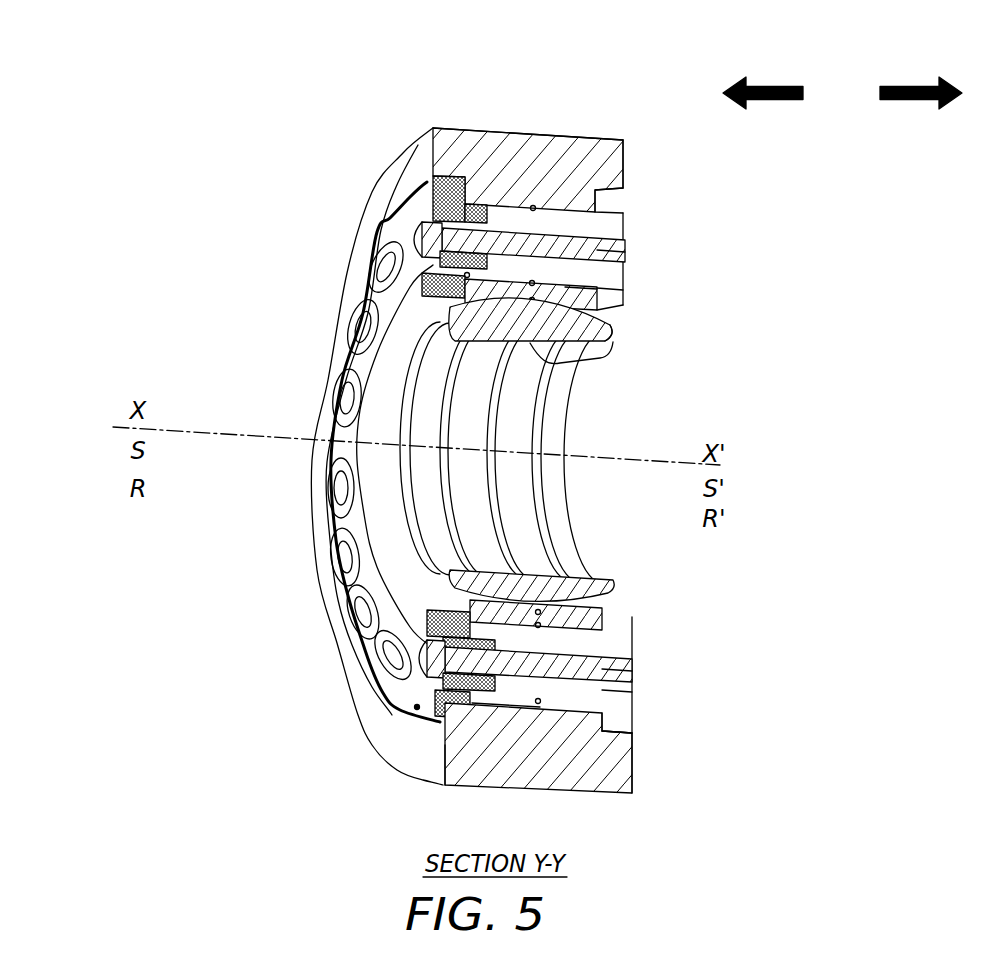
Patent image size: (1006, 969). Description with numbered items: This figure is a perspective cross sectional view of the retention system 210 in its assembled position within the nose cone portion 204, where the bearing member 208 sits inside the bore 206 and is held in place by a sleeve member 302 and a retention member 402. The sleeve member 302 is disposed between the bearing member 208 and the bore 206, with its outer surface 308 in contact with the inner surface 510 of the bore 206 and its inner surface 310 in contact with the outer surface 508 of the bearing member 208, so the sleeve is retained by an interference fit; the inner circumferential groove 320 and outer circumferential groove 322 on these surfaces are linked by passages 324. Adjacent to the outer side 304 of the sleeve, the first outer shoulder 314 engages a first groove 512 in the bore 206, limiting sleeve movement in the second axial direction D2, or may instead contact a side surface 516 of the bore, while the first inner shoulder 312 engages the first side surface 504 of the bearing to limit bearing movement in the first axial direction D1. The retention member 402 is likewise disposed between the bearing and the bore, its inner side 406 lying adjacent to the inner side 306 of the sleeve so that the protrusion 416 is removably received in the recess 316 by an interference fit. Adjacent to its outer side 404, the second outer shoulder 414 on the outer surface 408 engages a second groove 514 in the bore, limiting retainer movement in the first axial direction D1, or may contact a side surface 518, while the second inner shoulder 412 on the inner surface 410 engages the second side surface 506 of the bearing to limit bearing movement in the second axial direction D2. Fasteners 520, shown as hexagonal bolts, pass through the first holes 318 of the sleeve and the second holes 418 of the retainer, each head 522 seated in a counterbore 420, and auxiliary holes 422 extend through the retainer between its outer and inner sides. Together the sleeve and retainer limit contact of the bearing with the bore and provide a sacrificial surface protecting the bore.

The nose cone portion 204 is at (365, 232).
The bore 206 is at (534, 720).
The bearing member 208 is at (518, 504).
The retention system 210 is at (633, 213).
The sleeve member 302 is at (625, 237).
The outer side 304 is at (625, 295).
The inner side 306 is at (475, 170).
The outer surface 308 is at (606, 140).
The inner surface 310 is at (600, 275).
The first inner shoulder 312 is at (615, 316).
The first outer shoulder 314 is at (608, 200).
The recess 316 is at (533, 206).
The first holes 318 is at (577, 200).
The inner circumferential groove 320 is at (625, 253).
The outer circumferential groove 322 is at (532, 281).
The passages 324 is at (603, 345).
The retention member 402 is at (386, 511).
The outer side 404 is at (342, 302).
The inner side 406 is at (422, 274).
The outer surface 408 is at (437, 170).
The inner surface 410 is at (378, 418).
The second inner shoulder 412 is at (347, 328).
The second outer shoulder 414 is at (432, 180).
The protrusion 416 is at (482, 206).
The second holes 418 is at (432, 200).
The counterbores 420 is at (396, 664).
The auxiliary holes 422 is at (417, 708).
The first side surface 504 is at (610, 613).
The second side surface 506 is at (428, 612).
The outer surface 508 is at (600, 635).
The inner surface 510 is at (605, 688).
The first groove 512 is at (593, 722).
The second groove 514 is at (512, 700).
The side surface 516 is at (633, 737).
The side surface 518 is at (443, 755).
The fasteners 520 is at (632, 658).
The head 522 is at (388, 662).
The first axial direction D1 is at (907, 87).
The second axial direction D2 is at (767, 87).